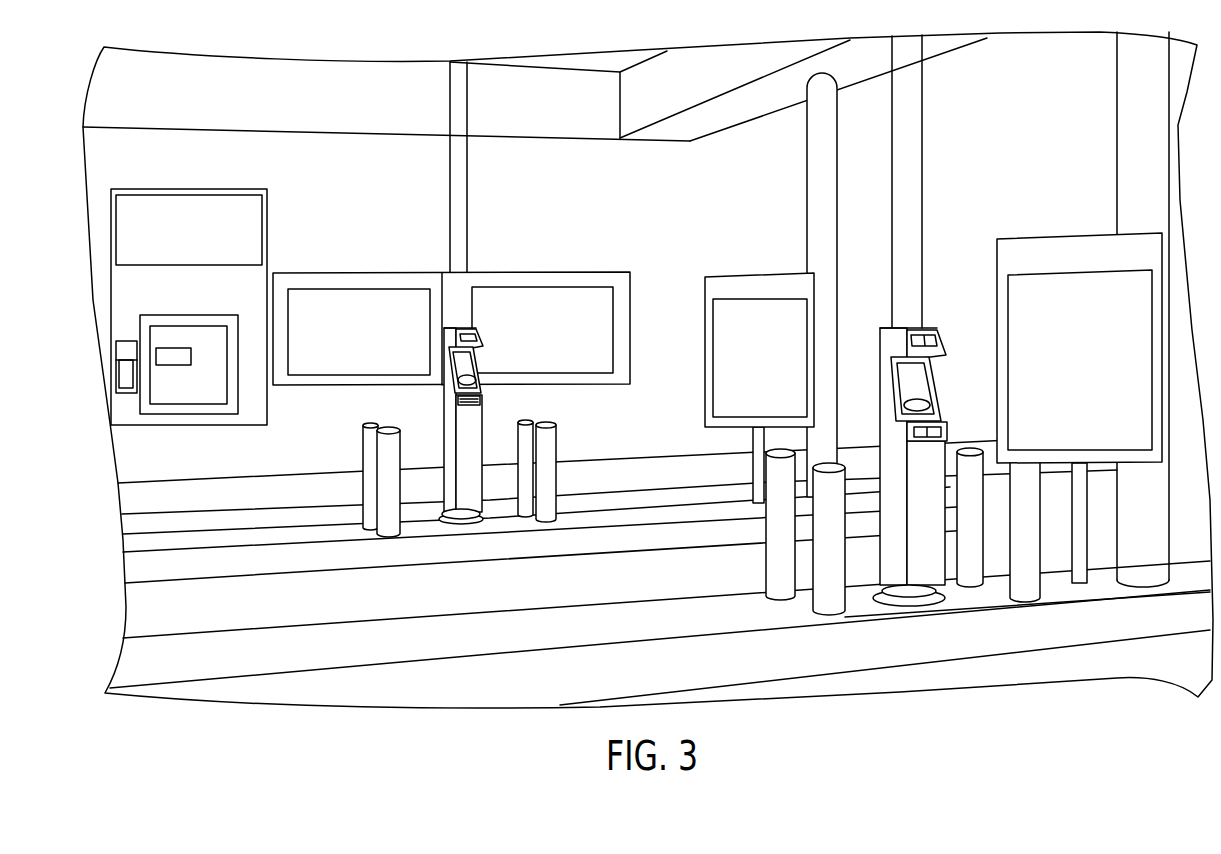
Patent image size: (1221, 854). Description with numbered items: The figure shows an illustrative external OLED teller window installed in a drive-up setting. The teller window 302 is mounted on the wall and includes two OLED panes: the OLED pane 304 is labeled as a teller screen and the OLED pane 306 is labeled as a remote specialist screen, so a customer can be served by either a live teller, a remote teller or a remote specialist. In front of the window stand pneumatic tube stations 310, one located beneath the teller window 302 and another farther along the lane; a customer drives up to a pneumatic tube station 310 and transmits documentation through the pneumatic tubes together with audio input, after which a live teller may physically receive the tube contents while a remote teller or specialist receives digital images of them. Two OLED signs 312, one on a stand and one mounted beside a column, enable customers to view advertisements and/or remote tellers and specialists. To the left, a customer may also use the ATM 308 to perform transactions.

The teller window 302 is at (490, 270).
The OLED pane 304 is at (357, 288).
The OLED pane 306 is at (615, 328).
The ATM 308 is at (269, 229).
The pneumatic tube station 310 is at (483, 412).
The OLED sign 312 is at (752, 273).